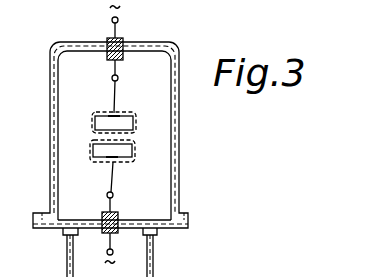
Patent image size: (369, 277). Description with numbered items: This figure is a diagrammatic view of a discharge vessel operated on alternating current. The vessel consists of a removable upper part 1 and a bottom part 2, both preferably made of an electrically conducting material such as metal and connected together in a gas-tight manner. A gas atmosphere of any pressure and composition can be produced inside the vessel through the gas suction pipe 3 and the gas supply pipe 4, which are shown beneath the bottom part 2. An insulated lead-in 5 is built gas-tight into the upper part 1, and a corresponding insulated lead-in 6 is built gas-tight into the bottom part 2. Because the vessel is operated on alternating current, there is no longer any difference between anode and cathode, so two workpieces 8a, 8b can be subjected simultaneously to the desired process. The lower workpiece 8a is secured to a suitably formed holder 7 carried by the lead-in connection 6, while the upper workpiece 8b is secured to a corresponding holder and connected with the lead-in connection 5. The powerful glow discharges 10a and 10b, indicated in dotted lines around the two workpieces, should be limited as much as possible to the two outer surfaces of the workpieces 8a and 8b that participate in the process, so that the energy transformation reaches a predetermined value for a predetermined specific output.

The removable upper part 1 is at (52, 152).
The bottom part 2 is at (53, 227).
The gas suction pipe 3 is at (67, 248).
The gas supply pipe 4 is at (155, 255).
The insulated lead-in 5 is at (111, 33).
The insulated lead-in 6 is at (115, 242).
The holder 7 is at (113, 177).
The workpiece 8a is at (116, 152).
The workpiece 8b is at (122, 124).
The glow discharge 10a is at (92, 162).
The glow discharge 10b is at (91, 122).